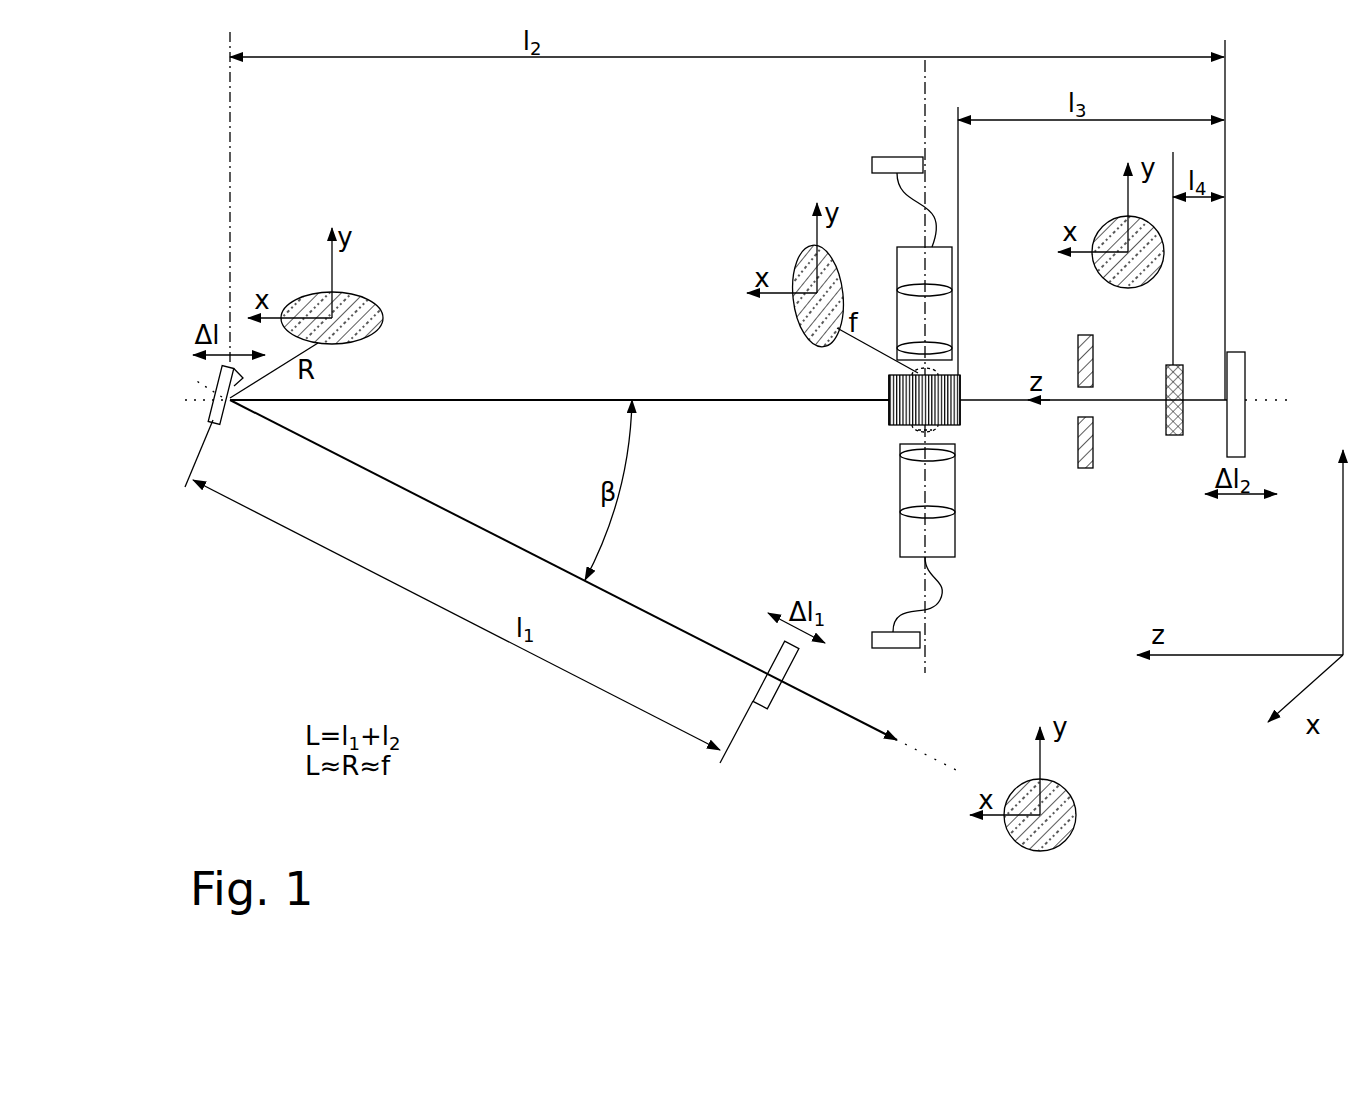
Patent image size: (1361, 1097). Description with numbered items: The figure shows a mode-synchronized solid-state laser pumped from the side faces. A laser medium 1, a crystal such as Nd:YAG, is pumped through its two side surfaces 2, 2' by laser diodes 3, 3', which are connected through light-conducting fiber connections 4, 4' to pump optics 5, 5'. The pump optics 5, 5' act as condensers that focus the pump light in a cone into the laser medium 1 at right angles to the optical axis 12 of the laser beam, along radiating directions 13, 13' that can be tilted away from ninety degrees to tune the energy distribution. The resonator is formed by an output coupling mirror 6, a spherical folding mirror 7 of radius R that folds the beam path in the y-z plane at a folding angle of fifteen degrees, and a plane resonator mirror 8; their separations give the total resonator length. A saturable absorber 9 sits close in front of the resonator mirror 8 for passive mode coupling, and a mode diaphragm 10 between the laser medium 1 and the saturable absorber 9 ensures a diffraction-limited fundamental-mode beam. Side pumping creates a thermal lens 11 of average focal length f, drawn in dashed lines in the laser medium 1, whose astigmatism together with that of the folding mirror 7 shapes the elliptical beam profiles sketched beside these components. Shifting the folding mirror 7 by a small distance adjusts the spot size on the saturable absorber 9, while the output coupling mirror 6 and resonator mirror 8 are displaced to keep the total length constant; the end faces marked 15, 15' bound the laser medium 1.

The laser medium 1 is at (960, 372).
The side surface 2 is at (886, 360).
The side surface 2' is at (898, 453).
The laser diode 3 is at (871, 145).
The laser diode 3' is at (946, 659).
The light-conducting fiber connection 4 is at (951, 207).
The light-conducting fiber connection 4' is at (954, 594).
The pump optics 5 is at (952, 303).
The pump optics 5' is at (960, 500).
The output coupling mirror 6 is at (773, 652).
The spherical folding mirror 7 is at (225, 412).
The resonator mirror 8 is at (1245, 352).
The saturable absorber 9 is at (1138, 288).
The mode diaphragm 10 is at (1085, 335).
The thermal lens 11 is at (935, 433).
The optical axis 12 is at (668, 397).
The radiating direction 13 is at (975, 217).
The radiating direction 13' is at (980, 549).
The grating surface 15 is at (995, 380).
The grating surface 15' is at (847, 411).